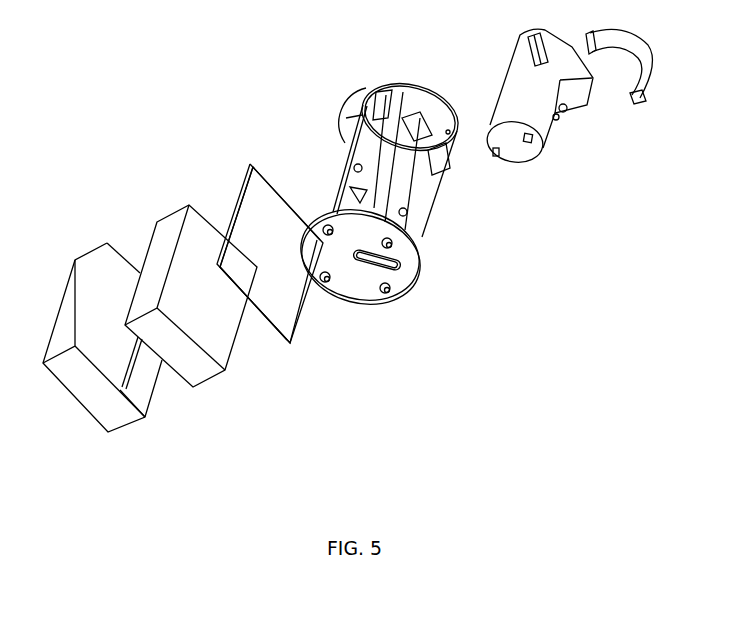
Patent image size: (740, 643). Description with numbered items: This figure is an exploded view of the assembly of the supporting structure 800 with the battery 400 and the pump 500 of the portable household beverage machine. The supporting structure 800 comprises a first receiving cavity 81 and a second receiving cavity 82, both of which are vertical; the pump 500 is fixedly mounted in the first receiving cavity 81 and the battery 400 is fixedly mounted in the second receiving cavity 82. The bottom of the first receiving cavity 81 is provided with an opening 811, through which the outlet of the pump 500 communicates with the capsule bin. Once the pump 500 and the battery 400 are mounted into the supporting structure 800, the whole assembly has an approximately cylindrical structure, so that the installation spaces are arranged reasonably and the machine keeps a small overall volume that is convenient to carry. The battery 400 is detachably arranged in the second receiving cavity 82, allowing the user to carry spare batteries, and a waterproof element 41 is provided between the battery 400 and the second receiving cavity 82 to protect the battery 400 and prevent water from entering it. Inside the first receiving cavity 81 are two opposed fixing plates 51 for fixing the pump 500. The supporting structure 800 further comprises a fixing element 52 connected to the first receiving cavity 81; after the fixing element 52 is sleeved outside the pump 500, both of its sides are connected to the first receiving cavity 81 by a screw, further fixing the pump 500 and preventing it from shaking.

The battery 400 is at (185, 260).
The waterproof element 41 is at (265, 285).
The supporting structure 800 is at (445, 236).
The first receiving cavity 81 is at (396, 178).
The opening 811 is at (355, 265).
The second receiving cavity 82 is at (357, 120).
The fixing plates 51 is at (434, 160).
The pump 500 is at (522, 77).
The fixing element 52 is at (636, 96).